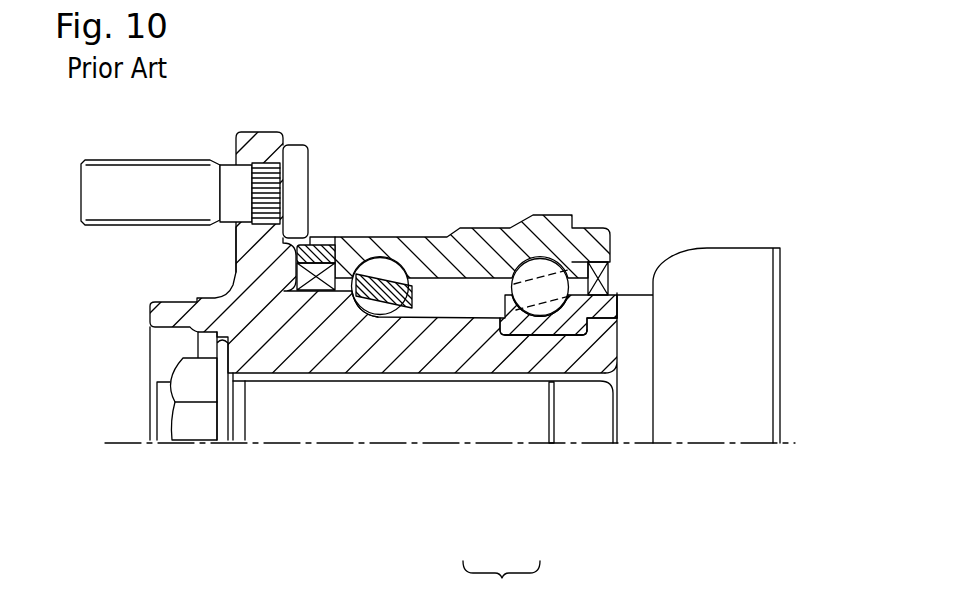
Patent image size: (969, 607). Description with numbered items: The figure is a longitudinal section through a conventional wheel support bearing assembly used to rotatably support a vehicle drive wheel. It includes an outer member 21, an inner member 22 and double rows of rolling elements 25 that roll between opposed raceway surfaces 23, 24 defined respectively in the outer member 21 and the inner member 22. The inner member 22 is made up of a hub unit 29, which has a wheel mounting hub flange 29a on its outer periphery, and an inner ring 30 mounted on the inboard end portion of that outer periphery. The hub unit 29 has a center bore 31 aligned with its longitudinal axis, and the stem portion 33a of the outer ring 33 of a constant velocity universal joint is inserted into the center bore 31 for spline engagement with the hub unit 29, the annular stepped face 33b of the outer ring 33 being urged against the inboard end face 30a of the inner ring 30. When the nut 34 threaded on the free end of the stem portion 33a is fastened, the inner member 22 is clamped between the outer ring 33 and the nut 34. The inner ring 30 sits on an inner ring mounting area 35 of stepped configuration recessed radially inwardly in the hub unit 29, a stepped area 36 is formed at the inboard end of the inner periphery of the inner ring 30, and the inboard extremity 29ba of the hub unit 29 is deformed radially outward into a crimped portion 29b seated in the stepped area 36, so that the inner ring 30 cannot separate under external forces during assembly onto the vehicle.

The outer member 21 is at (351, 237).
The inner member 22 is at (501, 584).
The raceway surfaces 23 is at (375, 261).
The raceway surfaces 24 is at (373, 313).
The rolling elements 25 is at (396, 272).
The hub unit 29 is at (453, 351).
The wheel mounting hub flange 29a is at (258, 145).
The crimped portion 29b is at (605, 335).
The inboard extremity 29ba is at (571, 322).
The inner ring 30 is at (539, 338).
The inboard end face 30a is at (622, 298).
The center bore 31 is at (236, 275).
The outer ring 33 is at (749, 259).
The stem portion 33a is at (398, 443).
The annular stepped face 33b is at (606, 270).
The nut 34 is at (196, 392).
The inner ring mounting area 35 is at (533, 372).
The stepped area 36 is at (612, 365).